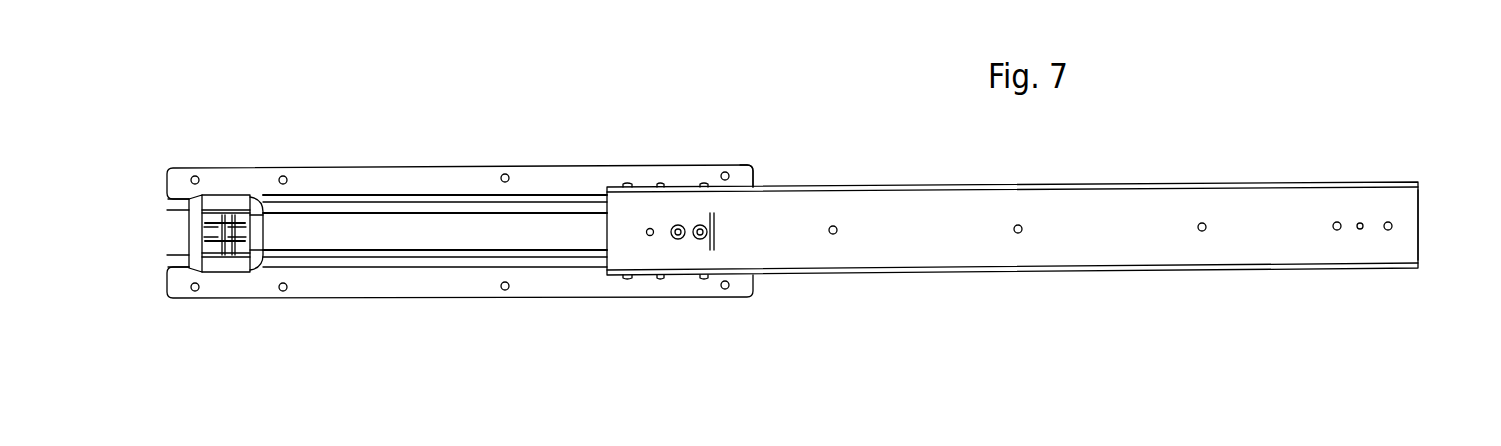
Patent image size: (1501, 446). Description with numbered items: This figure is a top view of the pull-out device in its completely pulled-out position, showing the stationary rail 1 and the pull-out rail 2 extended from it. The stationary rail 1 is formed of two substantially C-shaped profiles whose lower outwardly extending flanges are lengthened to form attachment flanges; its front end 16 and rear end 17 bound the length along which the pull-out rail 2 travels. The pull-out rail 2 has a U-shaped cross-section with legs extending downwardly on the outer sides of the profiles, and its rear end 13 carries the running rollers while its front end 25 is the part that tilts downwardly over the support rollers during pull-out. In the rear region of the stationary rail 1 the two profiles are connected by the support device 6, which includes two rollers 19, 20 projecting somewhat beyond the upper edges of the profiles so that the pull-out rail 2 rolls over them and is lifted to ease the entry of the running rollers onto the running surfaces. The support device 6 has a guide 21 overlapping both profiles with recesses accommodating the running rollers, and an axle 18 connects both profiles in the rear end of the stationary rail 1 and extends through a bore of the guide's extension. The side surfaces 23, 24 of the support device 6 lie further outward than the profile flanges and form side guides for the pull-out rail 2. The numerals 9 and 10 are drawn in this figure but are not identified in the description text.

The stationary rail 1 is at (492, 311).
The pull-out rail 2 is at (1097, 277).
The support device 6 is at (216, 180).
The lower flange of cabinet rail 9 is at (550, 290).
The upper flange of cabinet rail 10 is at (462, 178).
The rear end of the pull-out rail 13 is at (607, 222).
The front end of the stationary rail 16 is at (755, 177).
The rear end of the stationary rail 17 is at (165, 193).
The axle 18 is at (223, 238).
The roller 19 is at (238, 248).
The roller 20 is at (238, 220).
The guide 21 is at (256, 255).
The side surface 23 is at (217, 272).
The side surface 24 is at (236, 195).
The front end of the pull-out rail 25 is at (1418, 226).